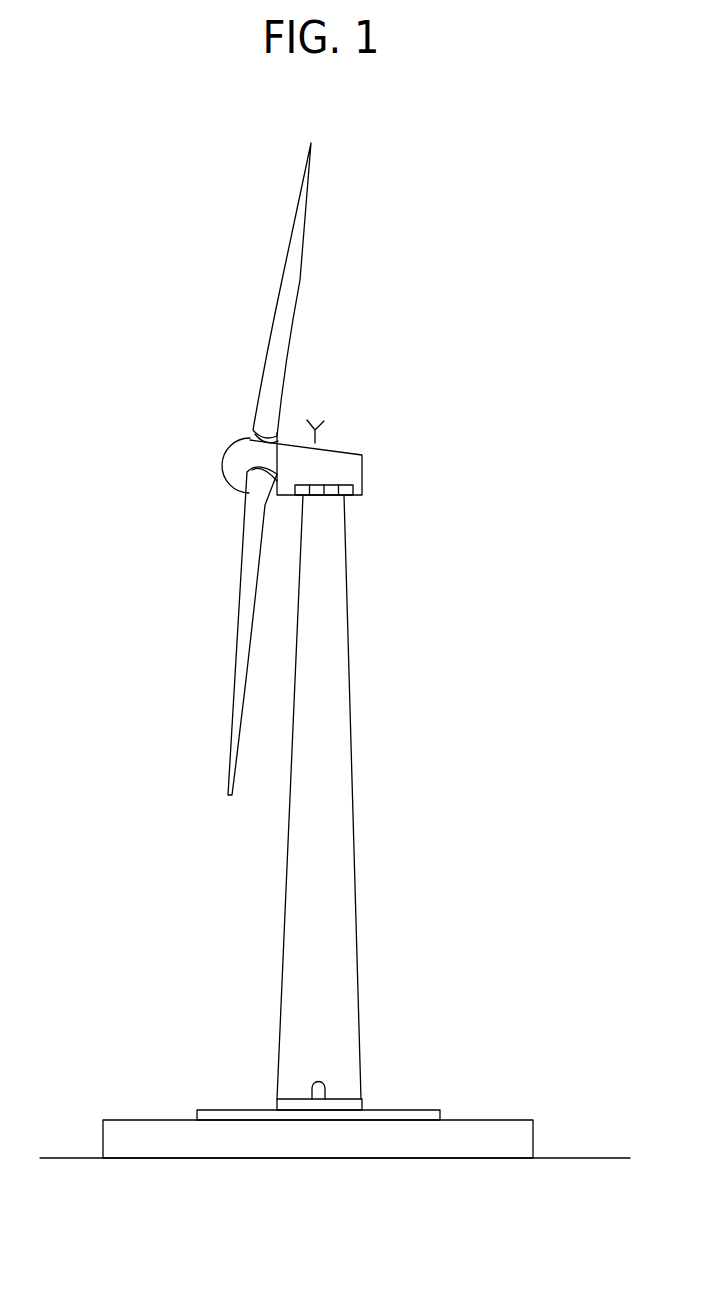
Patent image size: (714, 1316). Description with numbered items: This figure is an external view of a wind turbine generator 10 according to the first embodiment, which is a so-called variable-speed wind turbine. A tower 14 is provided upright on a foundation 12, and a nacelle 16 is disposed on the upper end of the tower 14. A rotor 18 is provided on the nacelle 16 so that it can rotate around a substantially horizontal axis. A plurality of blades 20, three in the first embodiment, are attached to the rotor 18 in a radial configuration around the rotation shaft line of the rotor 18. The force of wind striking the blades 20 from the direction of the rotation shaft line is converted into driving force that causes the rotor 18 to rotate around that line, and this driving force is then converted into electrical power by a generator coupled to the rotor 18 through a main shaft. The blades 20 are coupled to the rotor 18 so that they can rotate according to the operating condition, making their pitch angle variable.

The wind turbine generator 10 is at (470, 398).
The foundation 12 is at (500, 1119).
The tower 14 is at (349, 657).
The nacelle 16 is at (333, 448).
The rotor 18 is at (222, 462).
The blade 20 is at (300, 238).